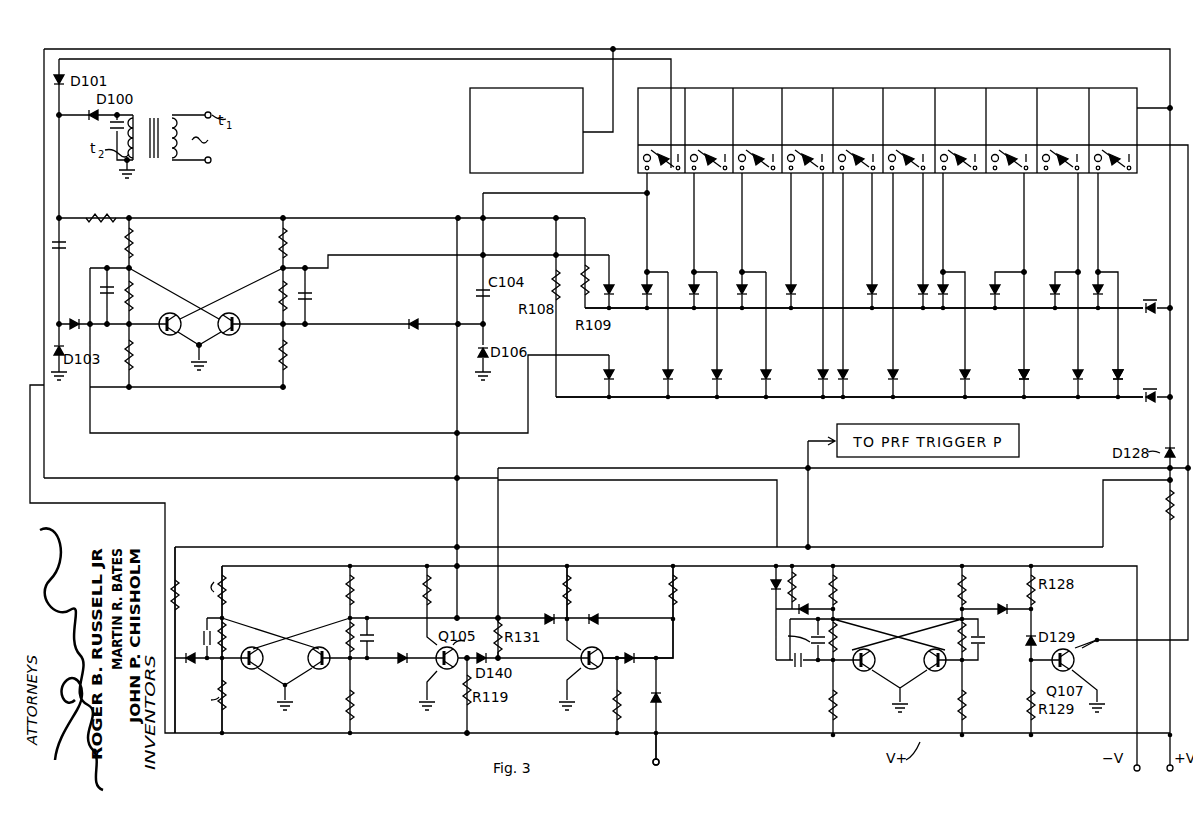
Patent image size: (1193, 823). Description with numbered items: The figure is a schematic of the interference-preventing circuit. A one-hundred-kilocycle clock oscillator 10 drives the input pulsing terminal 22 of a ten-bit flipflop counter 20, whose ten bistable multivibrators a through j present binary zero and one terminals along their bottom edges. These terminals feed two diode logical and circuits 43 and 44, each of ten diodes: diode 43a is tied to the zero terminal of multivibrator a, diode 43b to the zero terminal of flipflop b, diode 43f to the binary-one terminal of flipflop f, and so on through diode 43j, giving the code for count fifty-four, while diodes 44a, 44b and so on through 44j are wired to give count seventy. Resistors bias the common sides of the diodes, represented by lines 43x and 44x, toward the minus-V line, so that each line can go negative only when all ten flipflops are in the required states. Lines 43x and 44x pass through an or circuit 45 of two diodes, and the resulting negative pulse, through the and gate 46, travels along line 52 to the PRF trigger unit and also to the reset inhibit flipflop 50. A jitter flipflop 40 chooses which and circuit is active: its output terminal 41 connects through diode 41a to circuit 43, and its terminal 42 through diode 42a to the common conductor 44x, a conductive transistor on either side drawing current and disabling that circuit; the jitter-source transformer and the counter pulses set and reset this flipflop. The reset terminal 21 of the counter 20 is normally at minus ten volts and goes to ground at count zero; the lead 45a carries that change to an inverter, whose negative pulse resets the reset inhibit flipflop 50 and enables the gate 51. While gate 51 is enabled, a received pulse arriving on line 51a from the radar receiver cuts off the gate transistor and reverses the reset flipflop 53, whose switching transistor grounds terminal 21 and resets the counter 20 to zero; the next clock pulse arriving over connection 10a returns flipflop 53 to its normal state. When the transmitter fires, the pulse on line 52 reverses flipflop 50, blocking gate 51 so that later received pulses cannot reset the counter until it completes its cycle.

The clock oscillator 10 is at (554, 92).
The connection 10a is at (279, 478).
The ten-bit flipflop counter 20 is at (780, 79).
The reset terminal 21 is at (1165, 144).
The input pulsing terminal 22 is at (1154, 108).
The jitter flipflop 40 is at (330, 314).
The terminal 41 is at (282, 269).
The diode 41a is at (613, 286).
The terminal 42 is at (134, 269).
The diode 42a is at (613, 376).
The diode logical 'and' circuit 43 is at (864, 272).
The diode 43a is at (650, 286).
The diode 43b is at (696, 290).
The diode 43f is at (917, 293).
The line 43x is at (1036, 308).
The diode 43j is at (1102, 291).
The diode logical 'and' circuit 44 is at (849, 365).
The diode 44a is at (674, 374).
The diode 44b is at (722, 375).
The common conductor 44x is at (1032, 394).
The diode 44j is at (1114, 370).
The 'or' circuit 45 is at (1149, 351).
The lead 45a is at (532, 468).
The 'and' gate 46 is at (1138, 512).
The reset inhibit flipflop 50 is at (301, 641).
The gate 51 is at (604, 650).
The line 51a is at (660, 762).
The line 52 is at (956, 549).
The reset flipflop 53 is at (883, 651).